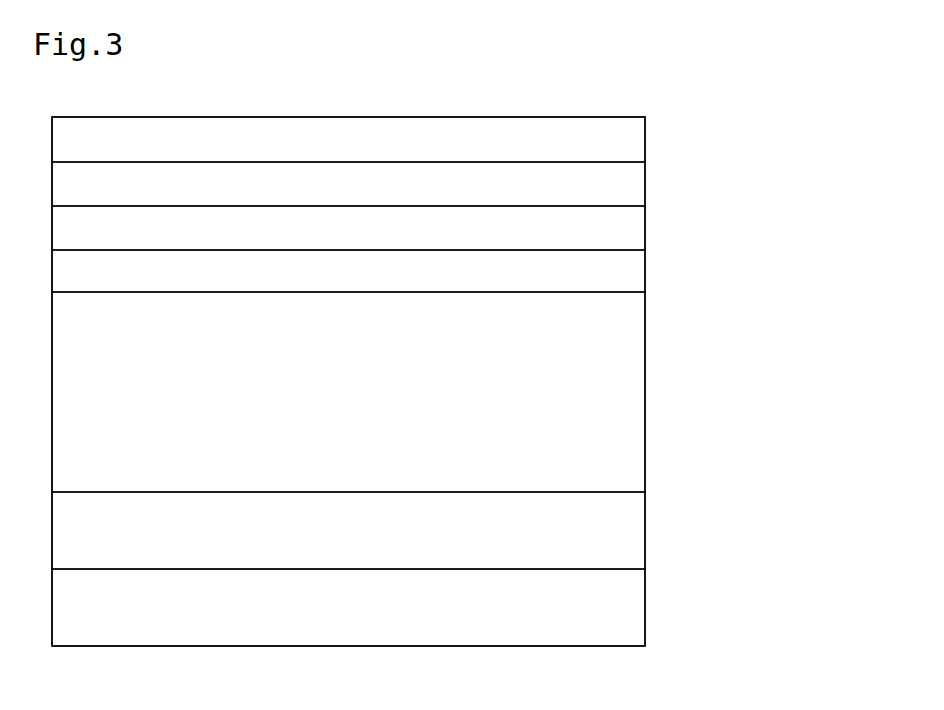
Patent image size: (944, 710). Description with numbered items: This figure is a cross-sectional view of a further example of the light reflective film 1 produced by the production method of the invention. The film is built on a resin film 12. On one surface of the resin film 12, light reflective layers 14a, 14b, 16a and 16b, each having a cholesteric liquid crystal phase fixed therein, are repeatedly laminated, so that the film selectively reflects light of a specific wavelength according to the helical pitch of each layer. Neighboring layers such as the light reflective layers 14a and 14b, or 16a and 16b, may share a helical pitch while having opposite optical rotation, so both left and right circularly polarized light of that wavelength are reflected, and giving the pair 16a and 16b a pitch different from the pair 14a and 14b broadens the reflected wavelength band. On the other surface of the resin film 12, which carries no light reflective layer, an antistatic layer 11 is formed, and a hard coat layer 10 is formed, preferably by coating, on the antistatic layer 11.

The light reflective film 1 is at (798, 655).
The hard coat layer 10 is at (645, 603).
The antistatic layer 11 is at (645, 527).
The resin film 12 is at (645, 393).
The light reflective layer 14a is at (645, 226).
The light reflective layer 14b is at (645, 270).
The light reflective layer 16a is at (645, 138).
The light reflective layer 16b is at (645, 182).